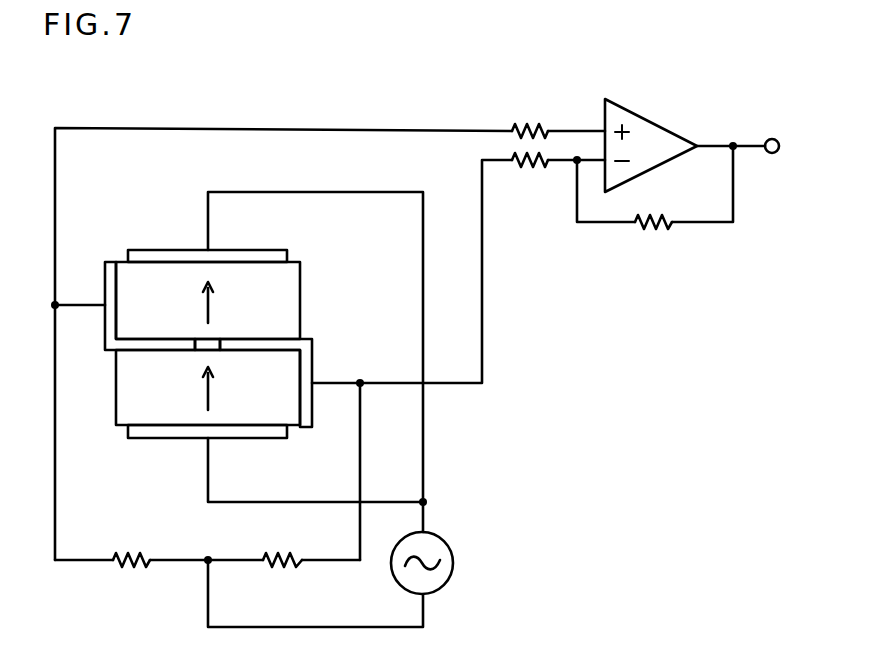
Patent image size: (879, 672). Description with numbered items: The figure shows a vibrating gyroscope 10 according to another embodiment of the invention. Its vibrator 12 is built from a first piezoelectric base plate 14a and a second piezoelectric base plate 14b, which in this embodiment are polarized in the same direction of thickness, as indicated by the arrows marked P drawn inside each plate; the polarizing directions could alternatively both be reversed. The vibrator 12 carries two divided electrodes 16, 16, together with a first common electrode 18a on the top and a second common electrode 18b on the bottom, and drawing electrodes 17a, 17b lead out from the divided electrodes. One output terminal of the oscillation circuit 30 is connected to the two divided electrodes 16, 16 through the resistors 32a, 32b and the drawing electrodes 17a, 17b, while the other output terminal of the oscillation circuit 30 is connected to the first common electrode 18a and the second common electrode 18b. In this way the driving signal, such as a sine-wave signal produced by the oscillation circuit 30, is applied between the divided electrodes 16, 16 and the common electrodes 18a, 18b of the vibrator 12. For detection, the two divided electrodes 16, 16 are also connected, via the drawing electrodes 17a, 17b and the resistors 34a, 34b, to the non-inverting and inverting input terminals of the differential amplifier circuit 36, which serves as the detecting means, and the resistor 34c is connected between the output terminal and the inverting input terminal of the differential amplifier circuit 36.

The vibrating gyroscope 10 is at (455, 72).
The vibrator 12 is at (158, 248).
The first piezoelectric base plate 14a is at (300, 288).
The second piezoelectric base plate 14b is at (125, 402).
The divided electrode 16 is at (280, 333).
The drawing electrode 17a is at (107, 282).
The drawing electrode 17b is at (308, 405).
The first common electrode 18a is at (257, 258).
The second common electrode 18b is at (177, 432).
The oscillation circuit 30 is at (450, 542).
The resistor 32a is at (132, 568).
The resistor 32b is at (285, 568).
The resistor 34a is at (530, 125).
The resistor 34b is at (527, 168).
The resistor 34c is at (655, 230).
The differential amplifier circuit 36 is at (660, 125).